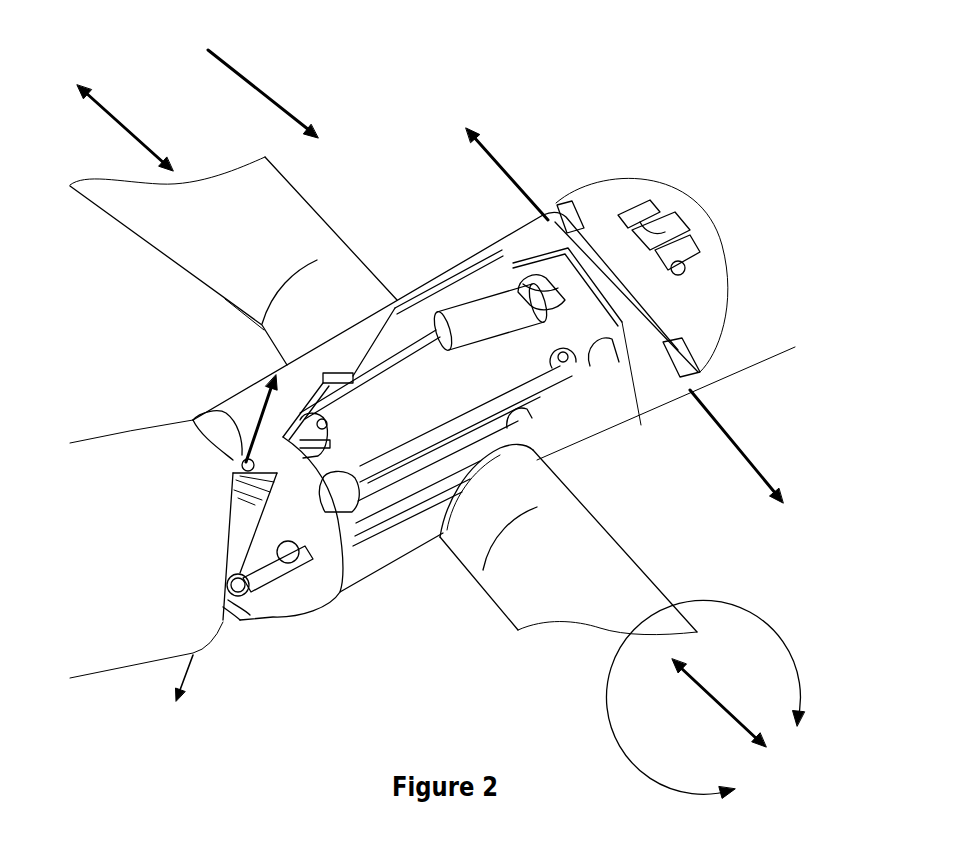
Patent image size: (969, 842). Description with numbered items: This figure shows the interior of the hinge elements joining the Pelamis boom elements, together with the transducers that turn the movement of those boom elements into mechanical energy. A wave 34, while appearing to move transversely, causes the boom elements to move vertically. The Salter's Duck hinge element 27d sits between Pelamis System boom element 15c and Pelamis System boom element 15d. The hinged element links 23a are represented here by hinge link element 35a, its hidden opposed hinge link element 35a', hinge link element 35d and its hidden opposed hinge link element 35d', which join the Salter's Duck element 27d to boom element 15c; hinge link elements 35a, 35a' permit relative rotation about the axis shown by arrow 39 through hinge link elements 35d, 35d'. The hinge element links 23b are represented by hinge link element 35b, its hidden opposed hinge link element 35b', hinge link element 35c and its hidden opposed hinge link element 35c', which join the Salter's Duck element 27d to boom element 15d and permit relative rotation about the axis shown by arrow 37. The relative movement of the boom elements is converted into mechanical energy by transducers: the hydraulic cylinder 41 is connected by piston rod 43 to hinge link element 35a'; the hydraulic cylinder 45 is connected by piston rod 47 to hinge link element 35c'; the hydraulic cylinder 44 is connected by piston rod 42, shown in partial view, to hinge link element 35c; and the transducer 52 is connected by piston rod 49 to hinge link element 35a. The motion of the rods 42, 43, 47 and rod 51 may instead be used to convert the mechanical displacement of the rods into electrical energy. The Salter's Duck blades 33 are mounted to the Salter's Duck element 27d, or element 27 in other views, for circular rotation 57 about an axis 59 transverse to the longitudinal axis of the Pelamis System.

The Pelamis System boom element 15c is at (148, 665).
The Pelamis System boom element 15d is at (792, 348).
The hinged element link 23a is at (203, 428).
The hinge element link 23b is at (667, 323).
The Salter's Duck element 27 is at (293, 188).
The Salter's Duck hinge element 27d is at (407, 560).
The Salter's Duck blades 33 is at (245, 168).
The wave 34 is at (252, 83).
The hinge link element 35a is at (278, 629).
The hinge link element 35a' is at (172, 399).
The hinge link element 35b is at (741, 333).
The hinge link element 35b' is at (567, 172).
The hinge link element 35c is at (659, 185).
The hinge link element 35c' is at (568, 527).
The hinge link element 35d is at (207, 546).
The hinge link element 35d' is at (266, 660).
The arrow 37 is at (620, 313).
The arrow 39 is at (255, 437).
The hydraulic cylinder 41 is at (462, 323).
The piston rod 42 is at (322, 420).
The piston rod 43 is at (382, 358).
The hydraulic cylinder 44 is at (313, 442).
The hydraulic cylinder 45 is at (338, 490).
The piston rod 47 is at (463, 427).
The piston rod 49 is at (300, 573).
The rod 51 is at (527, 388).
The transducer 52 is at (533, 405).
The circular rotation 57 is at (800, 650).
The axis 59 is at (131, 130).